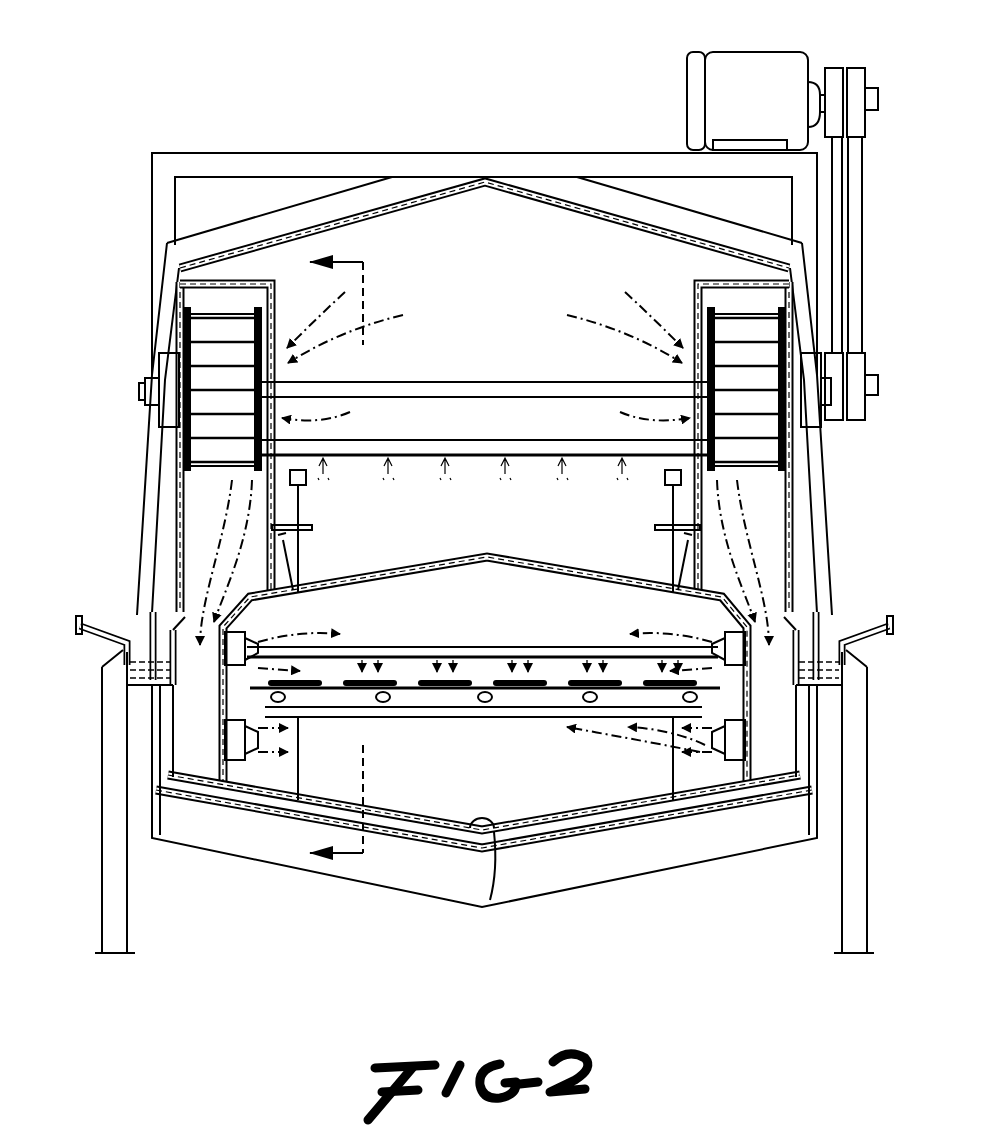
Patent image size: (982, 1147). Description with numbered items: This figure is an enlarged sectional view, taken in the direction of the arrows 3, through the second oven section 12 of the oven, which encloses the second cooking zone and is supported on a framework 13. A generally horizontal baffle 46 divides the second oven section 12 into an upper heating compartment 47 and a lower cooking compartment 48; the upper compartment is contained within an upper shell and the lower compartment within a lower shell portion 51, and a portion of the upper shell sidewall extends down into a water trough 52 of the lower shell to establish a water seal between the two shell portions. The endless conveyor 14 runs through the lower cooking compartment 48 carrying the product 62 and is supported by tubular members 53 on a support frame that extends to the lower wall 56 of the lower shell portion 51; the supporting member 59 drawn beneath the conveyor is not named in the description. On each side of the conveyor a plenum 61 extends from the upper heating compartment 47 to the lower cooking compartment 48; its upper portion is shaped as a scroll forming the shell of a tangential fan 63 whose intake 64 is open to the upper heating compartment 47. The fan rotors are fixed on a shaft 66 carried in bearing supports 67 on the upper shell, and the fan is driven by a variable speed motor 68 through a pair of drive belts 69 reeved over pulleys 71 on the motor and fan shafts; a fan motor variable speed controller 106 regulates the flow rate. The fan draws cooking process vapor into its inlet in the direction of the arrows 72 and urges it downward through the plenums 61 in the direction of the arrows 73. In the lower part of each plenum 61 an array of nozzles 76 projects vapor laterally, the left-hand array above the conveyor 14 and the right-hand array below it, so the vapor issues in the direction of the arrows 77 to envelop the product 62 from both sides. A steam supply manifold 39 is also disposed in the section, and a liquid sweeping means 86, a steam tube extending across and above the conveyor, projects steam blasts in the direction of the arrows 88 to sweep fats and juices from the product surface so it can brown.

The second oven section 12 is at (480, 150).
The framework 13 is at (100, 905).
The endless conveyor 14 is at (540, 702).
The section line 3 is at (360, 558).
The steam supply manifold 39 is at (535, 445).
The baffle 46 is at (400, 568).
The upper heating compartment 47 is at (523, 276).
The lower cooking compartment 48 is at (604, 784).
The lower shell portion 51 is at (688, 862).
The water trough 52 is at (137, 640).
The tubular members 53 is at (395, 702).
The lower wall 56 is at (490, 900).
The support legs 59 is at (326, 718).
The plenums 61 is at (236, 503).
The product 62 is at (405, 672).
The tangential fan 63 is at (224, 320).
The intake 64 is at (300, 386).
The shaft 66 is at (485, 384).
The bearing supports 67 is at (150, 390).
The motor 68 is at (775, 57).
The drive belts 69 is at (862, 222).
The pulleys 71 is at (868, 75).
The arrows 72 is at (342, 328).
The arrows 73 is at (220, 558).
The nozzles 76 is at (252, 640).
The arrows 77 is at (310, 630).
The liquid sweeping means 86 is at (560, 658).
The arrows 88 is at (516, 672).
The fan motor variable speed controller 106 is at (692, 108).